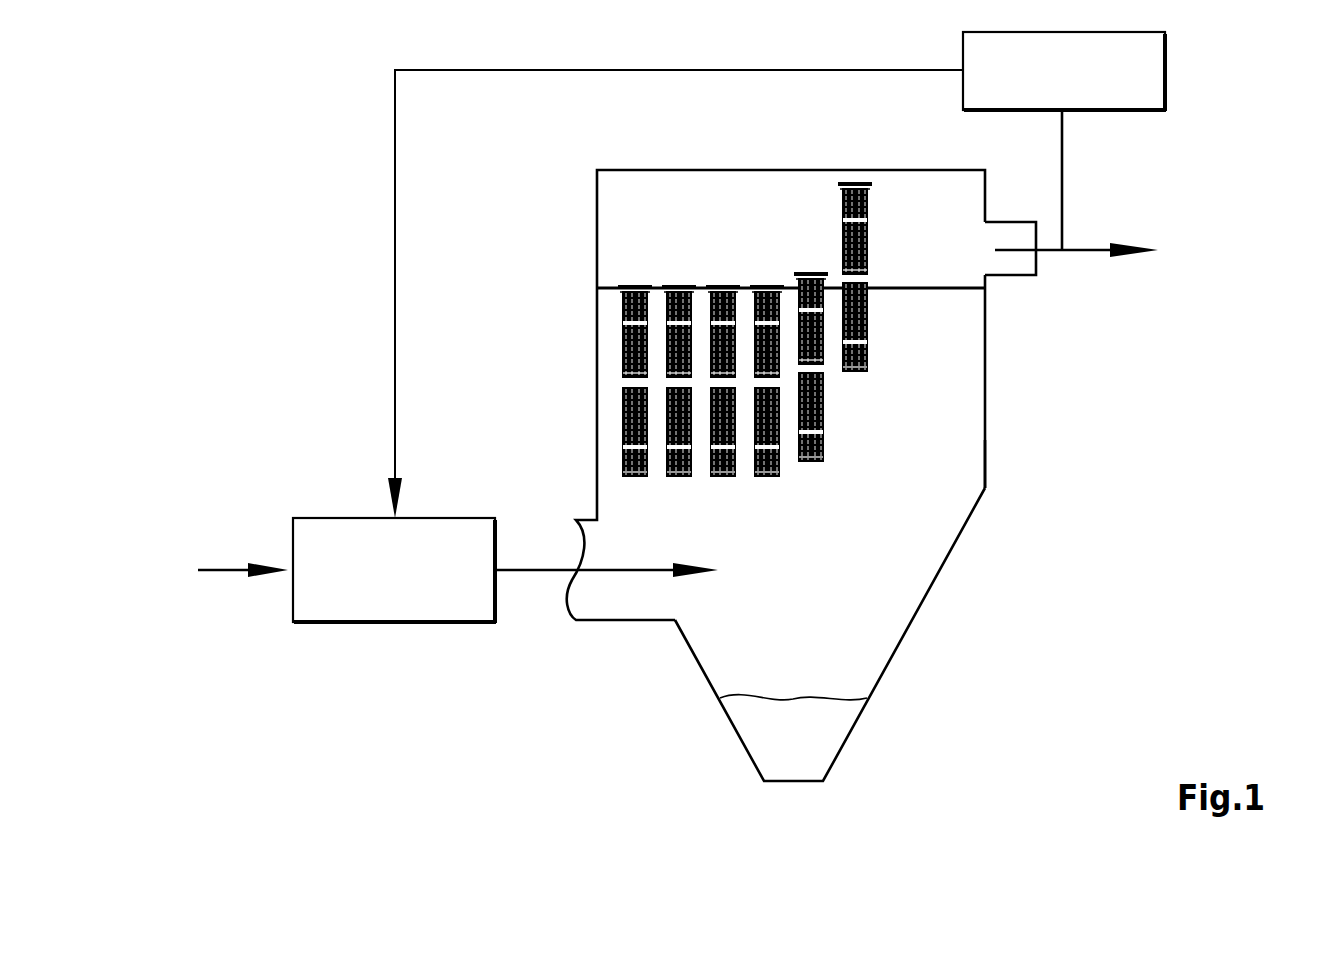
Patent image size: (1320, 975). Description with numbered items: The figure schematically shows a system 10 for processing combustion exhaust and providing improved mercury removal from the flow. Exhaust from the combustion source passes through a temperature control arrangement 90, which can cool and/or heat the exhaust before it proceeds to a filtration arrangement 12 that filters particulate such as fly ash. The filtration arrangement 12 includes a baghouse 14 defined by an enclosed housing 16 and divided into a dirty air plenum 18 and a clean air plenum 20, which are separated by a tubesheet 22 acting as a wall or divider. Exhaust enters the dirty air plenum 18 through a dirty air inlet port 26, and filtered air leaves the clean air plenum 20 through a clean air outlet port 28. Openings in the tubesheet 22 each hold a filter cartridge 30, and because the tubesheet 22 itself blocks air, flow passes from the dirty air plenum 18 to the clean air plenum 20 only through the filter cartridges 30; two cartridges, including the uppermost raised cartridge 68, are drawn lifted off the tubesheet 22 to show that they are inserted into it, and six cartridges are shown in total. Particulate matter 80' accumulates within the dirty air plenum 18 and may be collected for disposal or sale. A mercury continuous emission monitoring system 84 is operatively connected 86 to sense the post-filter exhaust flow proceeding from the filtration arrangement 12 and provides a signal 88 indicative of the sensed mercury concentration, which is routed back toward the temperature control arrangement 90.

The system 10 is at (260, 126).
The filtration arrangement 12 is at (636, 139).
The baghouse 14 is at (894, 712).
The enclosed housing 16 is at (985, 412).
The dirty air plenum 18 is at (955, 468).
The clean air plenum 20 is at (697, 190).
The tubesheet 22 is at (935, 292).
The dirty air inlet port 26 is at (622, 613).
The clean air outlet port 28 is at (1020, 272).
The filter cartridge 30 is at (842, 222).
The sorbent filter bag 68 is at (868, 243).
The particulate matter 80' is at (803, 746).
The mercury continuous emission monitoring system 84 is at (970, 92).
The operative connection 86 is at (1062, 168).
The signal 88 is at (785, 70).
The temperature control arrangement 90 is at (300, 589).